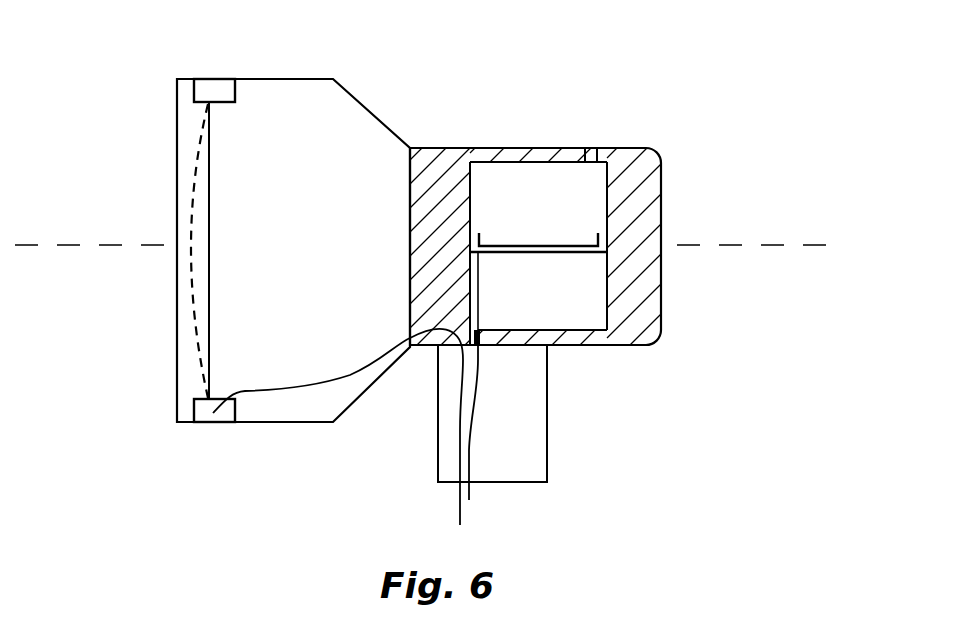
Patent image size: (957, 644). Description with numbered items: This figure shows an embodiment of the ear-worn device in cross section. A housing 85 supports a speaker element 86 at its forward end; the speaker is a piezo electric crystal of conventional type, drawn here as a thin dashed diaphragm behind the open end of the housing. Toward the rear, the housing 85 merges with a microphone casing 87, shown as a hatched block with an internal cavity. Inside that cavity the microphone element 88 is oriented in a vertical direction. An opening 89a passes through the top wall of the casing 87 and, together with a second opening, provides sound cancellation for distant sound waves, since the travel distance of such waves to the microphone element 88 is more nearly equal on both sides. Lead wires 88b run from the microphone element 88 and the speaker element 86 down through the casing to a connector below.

The housing 85 is at (352, 95).
The speaker element 86 is at (205, 338).
The microphone casing 87 is at (437, 162).
The microphone element 88 is at (563, 245).
The lead wires 88b is at (487, 347).
The opening 89a is at (587, 152).